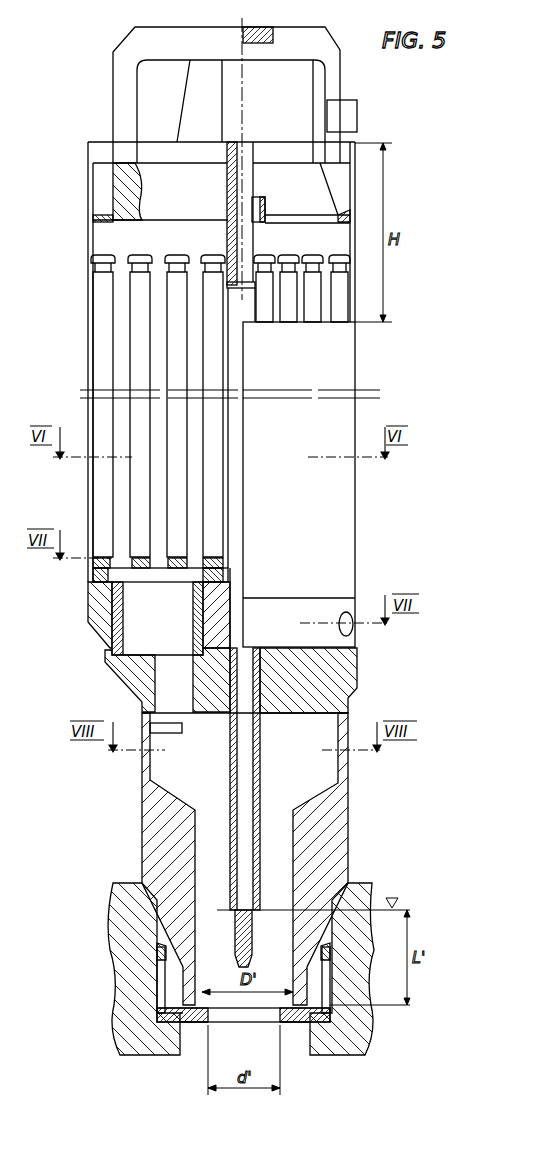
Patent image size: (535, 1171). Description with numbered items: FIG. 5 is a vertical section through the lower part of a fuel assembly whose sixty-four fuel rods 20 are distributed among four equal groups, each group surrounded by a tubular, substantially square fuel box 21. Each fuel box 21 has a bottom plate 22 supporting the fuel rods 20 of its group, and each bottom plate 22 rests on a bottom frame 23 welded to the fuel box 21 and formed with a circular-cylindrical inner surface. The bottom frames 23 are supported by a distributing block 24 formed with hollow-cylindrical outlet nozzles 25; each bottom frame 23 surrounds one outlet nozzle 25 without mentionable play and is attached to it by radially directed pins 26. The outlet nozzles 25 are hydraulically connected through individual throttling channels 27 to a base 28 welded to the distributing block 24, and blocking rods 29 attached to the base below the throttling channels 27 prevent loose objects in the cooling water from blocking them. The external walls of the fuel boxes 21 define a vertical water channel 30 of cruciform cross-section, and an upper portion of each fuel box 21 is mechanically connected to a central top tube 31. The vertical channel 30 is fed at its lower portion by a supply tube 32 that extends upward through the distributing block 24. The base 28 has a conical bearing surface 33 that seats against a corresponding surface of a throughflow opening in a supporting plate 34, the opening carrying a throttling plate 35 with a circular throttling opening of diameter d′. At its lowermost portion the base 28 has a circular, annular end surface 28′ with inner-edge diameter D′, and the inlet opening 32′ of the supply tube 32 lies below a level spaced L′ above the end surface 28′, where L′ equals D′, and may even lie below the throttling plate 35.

The fuel rods 20 is at (138, 352).
The fuel box 21 is at (88, 498).
The bottom plate 22 is at (88, 573).
The bottom frame 23 is at (100, 630).
The distributing block 24 is at (362, 676).
The outlet nozzle 25 is at (115, 612).
The pin 26 is at (349, 633).
The throttling channel 27 is at (140, 688).
The base 28 is at (285, 859).
The annular end surface 28' is at (243, 1028).
The blocking rod 29 is at (174, 733).
The vertical water channel 30 is at (250, 512).
The central top tube 31 is at (227, 235).
The supply tube 32 is at (178, 779).
The inlet opening 32' is at (154, 968).
The conical bearing surface 33 is at (143, 893).
The supporting plate 34 is at (127, 940).
The throttling plate 35 is at (197, 1027).